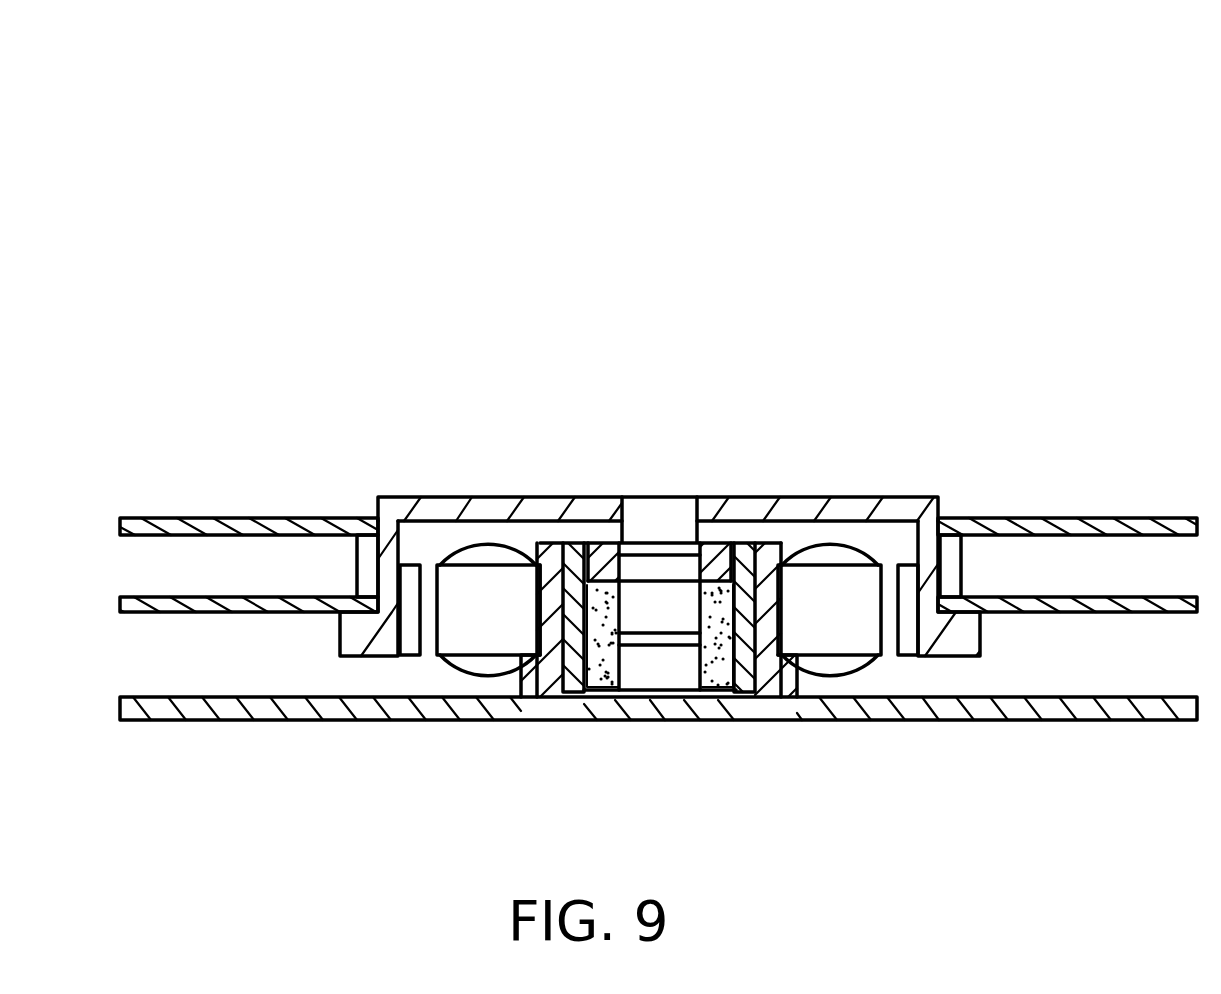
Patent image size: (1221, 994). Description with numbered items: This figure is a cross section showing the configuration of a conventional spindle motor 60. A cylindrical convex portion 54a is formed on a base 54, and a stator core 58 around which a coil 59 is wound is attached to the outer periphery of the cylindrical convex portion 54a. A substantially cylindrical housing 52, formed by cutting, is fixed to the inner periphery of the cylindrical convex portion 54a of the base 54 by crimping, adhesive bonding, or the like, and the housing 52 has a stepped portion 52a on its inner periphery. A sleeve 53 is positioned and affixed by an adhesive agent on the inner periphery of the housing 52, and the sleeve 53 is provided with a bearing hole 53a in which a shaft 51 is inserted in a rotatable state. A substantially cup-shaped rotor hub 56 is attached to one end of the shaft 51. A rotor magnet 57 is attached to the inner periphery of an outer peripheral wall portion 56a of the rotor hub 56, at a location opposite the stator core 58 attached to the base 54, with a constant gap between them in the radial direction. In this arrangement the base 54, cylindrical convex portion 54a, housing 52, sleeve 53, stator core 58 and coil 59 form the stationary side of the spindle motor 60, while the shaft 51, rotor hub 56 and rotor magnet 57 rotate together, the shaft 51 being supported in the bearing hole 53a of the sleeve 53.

The shaft 51 is at (657, 497).
The housing 52 is at (572, 692).
The stepped portion 52a is at (733, 548).
The sleeve 53 is at (600, 562).
The bearing hole 53a is at (548, 675).
The base 54 is at (783, 700).
The cylindrical convex portion 54a is at (543, 623).
The rotor hub 56 is at (897, 507).
The outer peripheral wall portion 56a is at (927, 577).
The rotor magnet 57 is at (912, 652).
The stator core 58 is at (870, 658).
The coil 59 is at (821, 560).
The spindle motor 60 is at (815, 212).